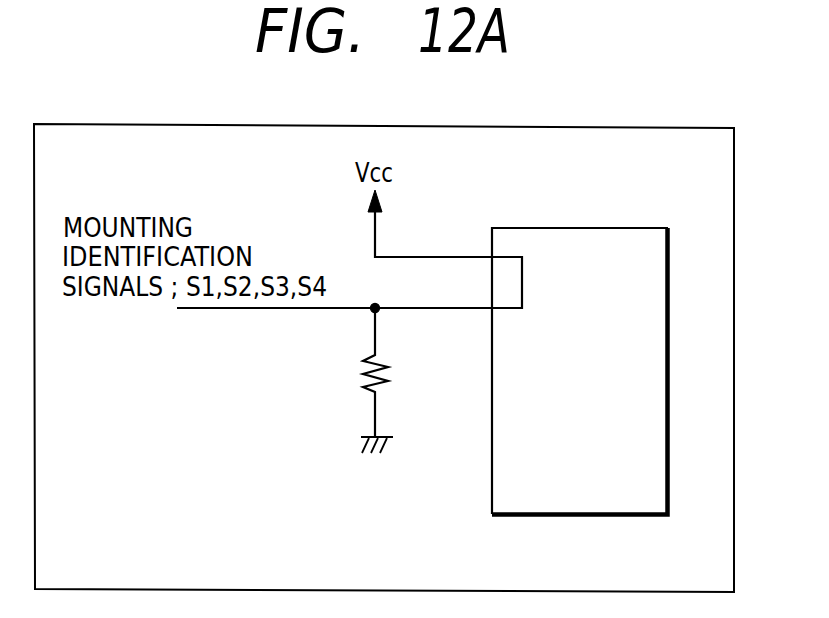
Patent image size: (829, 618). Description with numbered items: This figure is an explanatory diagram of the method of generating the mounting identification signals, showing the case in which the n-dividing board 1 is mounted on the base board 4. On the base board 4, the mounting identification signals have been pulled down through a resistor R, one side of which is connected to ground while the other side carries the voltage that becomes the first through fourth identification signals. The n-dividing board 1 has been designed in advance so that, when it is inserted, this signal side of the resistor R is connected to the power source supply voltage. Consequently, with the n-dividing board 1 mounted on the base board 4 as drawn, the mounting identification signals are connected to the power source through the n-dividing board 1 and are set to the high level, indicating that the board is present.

The base board 4 is at (665, 128).
The n-dividing board 1 is at (637, 226).
The resistor R is at (386, 372).